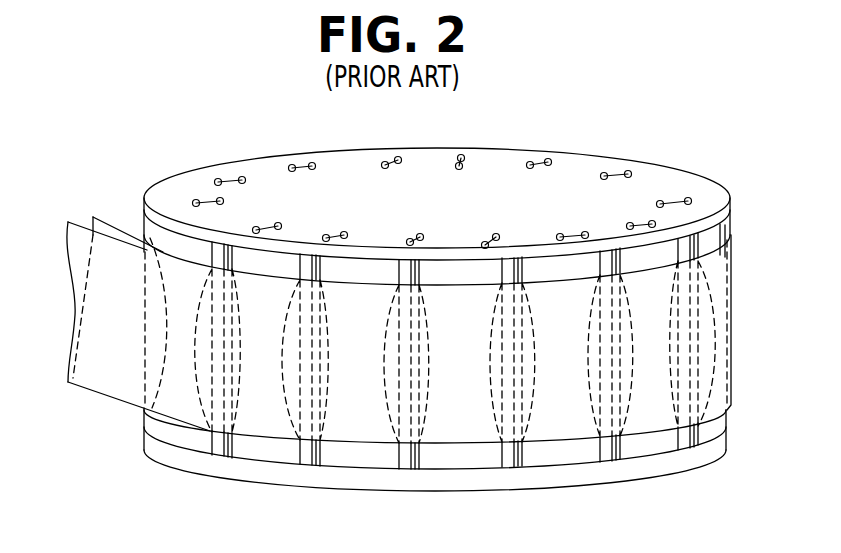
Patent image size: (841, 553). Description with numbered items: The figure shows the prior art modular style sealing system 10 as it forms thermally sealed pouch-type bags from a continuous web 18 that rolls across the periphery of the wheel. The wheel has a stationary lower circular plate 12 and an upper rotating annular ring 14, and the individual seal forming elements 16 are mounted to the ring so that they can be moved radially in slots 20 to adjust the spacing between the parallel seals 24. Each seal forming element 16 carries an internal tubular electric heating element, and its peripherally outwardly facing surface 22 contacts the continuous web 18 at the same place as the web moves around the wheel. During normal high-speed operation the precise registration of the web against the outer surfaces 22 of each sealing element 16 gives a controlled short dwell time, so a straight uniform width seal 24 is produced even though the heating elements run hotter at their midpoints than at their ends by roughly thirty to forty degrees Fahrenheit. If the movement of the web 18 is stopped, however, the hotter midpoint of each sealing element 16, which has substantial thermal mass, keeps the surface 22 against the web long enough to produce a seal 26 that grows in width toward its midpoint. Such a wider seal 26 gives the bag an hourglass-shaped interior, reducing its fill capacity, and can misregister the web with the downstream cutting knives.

The modular style sealing system 10 is at (502, 132).
The stationary lower circular plate 12 is at (177, 432).
The upper rotating annular ring 14 is at (567, 185).
The seal forming elements 16 is at (733, 240).
The continuous web 18 is at (99, 376).
The slots 20 is at (300, 163).
The peripherally outwardly facing surface 22 is at (217, 256).
The straight uniform width seal 24 is at (224, 376).
The wider seal 26 is at (320, 395).